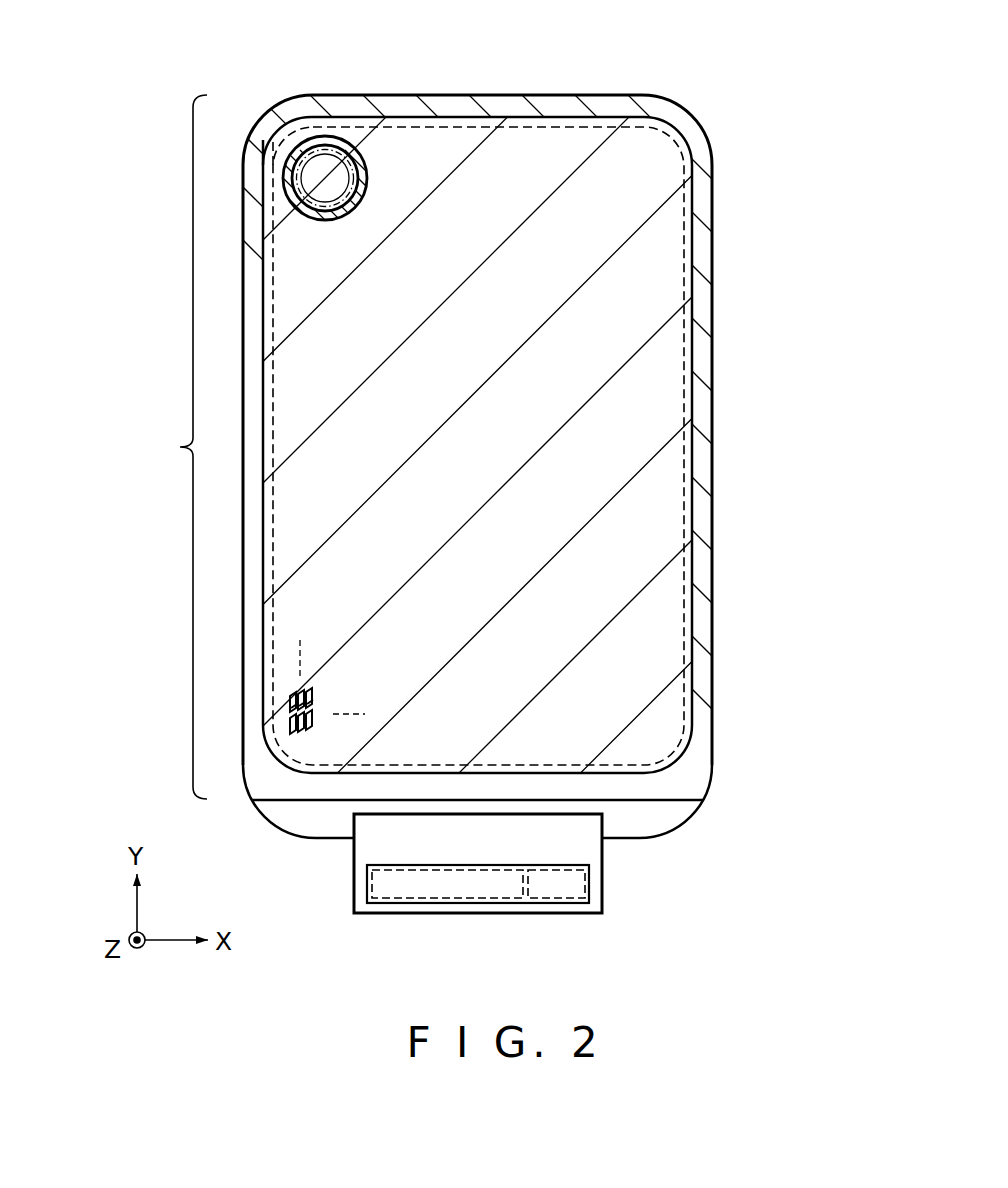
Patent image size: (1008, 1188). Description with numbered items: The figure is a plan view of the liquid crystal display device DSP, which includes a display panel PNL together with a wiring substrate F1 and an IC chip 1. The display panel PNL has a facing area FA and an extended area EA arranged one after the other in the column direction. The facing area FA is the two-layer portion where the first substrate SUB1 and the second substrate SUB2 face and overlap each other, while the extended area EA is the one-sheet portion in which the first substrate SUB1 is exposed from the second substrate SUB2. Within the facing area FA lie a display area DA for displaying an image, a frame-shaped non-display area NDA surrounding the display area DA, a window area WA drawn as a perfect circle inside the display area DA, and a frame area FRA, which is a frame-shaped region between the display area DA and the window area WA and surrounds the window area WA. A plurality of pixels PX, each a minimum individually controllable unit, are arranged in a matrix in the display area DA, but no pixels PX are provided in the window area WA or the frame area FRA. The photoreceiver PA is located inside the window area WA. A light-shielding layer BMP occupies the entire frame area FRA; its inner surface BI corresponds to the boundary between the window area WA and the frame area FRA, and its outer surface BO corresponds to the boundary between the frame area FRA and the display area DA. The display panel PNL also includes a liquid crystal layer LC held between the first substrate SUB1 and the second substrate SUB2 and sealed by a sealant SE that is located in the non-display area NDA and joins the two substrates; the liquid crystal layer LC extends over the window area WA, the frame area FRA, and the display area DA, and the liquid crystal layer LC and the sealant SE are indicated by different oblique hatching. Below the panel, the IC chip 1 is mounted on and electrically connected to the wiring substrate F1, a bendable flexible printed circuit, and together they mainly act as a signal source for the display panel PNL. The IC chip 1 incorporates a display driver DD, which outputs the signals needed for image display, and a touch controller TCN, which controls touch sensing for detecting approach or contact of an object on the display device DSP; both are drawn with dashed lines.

The liquid crystal display device DSP is at (504, 594).
The display panel PNL is at (717, 290).
The first substrate SUB1 is at (677, 813).
The second substrate SUB2 is at (700, 773).
The sealant SE is at (705, 357).
The liquid crystal layer LC is at (662, 412).
The display area DA is at (610, 120).
The non-display area NDA is at (677, 122).
The frame area FRA is at (378, 162).
The window area WA is at (355, 140).
The light-shielding layer BMP is at (317, 122).
The photoreceiver PA is at (318, 157).
The outer surface BO is at (262, 150).
The inner surface BI is at (278, 157).
The pixel PX is at (310, 692).
The extended area EA is at (295, 818).
The wiring substrate F1 is at (602, 890).
The IC chip 1 is at (553, 903).
The display driver DD is at (447, 884).
The touch controller TCN is at (556, 884).
The facing area FA is at (176, 447).